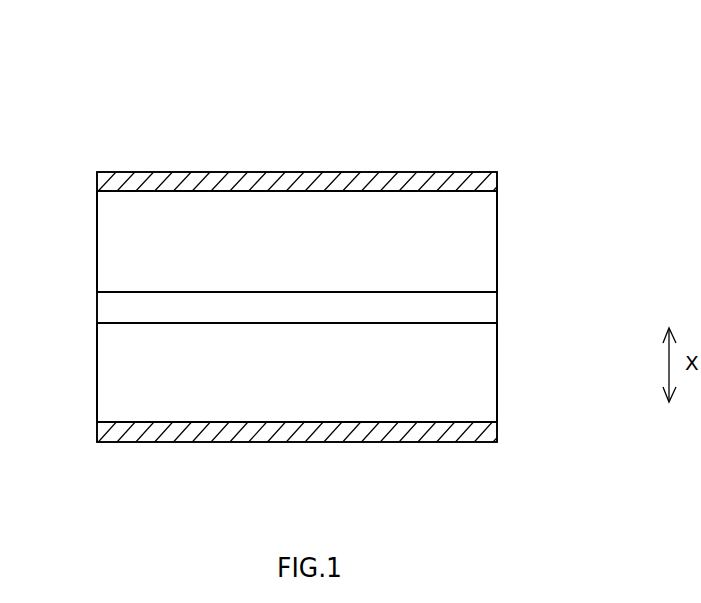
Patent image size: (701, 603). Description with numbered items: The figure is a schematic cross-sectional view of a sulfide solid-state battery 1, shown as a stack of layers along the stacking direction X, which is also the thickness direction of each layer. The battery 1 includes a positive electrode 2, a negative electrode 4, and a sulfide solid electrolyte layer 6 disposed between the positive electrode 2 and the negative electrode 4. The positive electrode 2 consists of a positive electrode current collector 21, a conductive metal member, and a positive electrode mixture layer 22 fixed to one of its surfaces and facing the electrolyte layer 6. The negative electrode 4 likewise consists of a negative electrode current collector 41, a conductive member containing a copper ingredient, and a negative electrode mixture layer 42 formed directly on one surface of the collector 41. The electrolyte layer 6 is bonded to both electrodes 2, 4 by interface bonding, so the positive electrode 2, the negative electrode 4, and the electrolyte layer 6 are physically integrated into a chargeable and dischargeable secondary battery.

The sulfide solid-state battery 1 is at (152, 118).
The positive electrode 2 is at (578, 173).
The positive electrode current collector 21 is at (490, 183).
The positive electrode mixture layer 22 is at (485, 243).
The sulfide solid electrolyte layer 6 is at (493, 308).
The negative electrode 4 is at (578, 350).
The negative electrode mixture layer 42 is at (488, 367).
The negative electrode current collector 41 is at (493, 432).